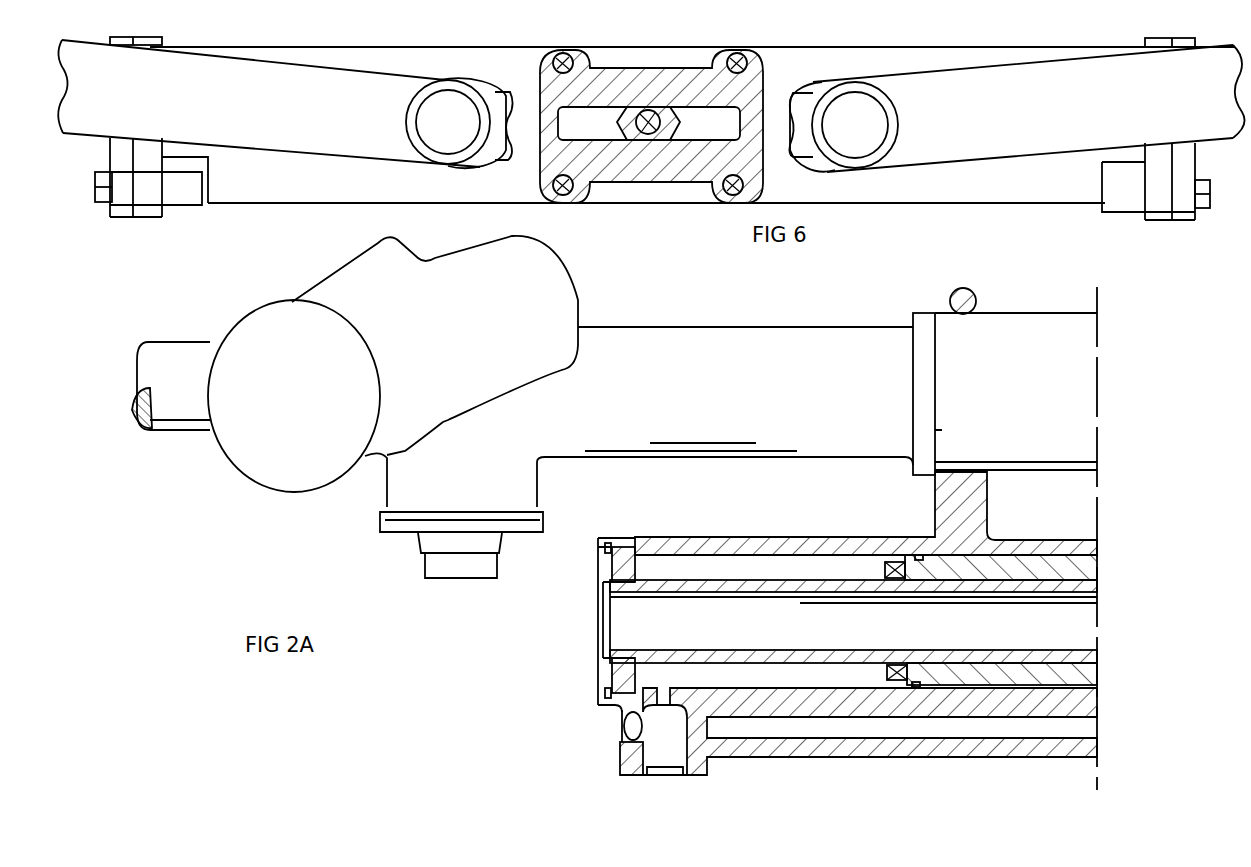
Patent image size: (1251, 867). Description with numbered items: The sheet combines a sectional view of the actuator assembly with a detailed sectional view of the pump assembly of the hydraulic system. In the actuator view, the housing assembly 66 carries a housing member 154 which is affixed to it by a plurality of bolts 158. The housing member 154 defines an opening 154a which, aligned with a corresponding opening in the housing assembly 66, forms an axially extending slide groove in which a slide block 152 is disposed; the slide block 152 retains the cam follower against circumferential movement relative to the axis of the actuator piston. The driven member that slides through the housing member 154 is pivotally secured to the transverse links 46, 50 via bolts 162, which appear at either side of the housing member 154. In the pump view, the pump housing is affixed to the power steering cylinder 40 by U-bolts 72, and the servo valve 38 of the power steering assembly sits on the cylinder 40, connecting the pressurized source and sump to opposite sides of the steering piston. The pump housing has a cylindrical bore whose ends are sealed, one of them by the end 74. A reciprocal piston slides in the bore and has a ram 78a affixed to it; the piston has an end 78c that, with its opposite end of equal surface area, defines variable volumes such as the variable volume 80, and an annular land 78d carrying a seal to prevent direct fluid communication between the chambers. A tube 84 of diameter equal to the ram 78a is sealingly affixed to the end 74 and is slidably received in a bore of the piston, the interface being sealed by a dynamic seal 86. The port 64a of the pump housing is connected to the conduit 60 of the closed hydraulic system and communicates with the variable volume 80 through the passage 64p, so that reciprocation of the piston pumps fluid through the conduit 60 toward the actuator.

In FIG. 2A, the servo valve 38 is at (556, 282).
In FIG. 2A, the power steering cylinder 40 is at (1062, 316).
In FIG. 6, the transverse link 46 is at (1105, 113).
In FIG. 6, the transverse link 50 is at (160, 110).
In FIG. 2A, the conduit 60 is at (662, 797).
In FIG. 2A, the port 64a is at (643, 786).
In FIG. 2A, the passage 64p is at (832, 727).
In FIG. 6, the housing assembly 66 is at (222, 201).
In FIG. 2A, the U-bolts 72 is at (976, 288).
In FIG. 2A, the end 74 is at (600, 578).
In FIG. 2A, the ram 78a is at (1067, 655).
In FIG. 2A, the end 78c is at (885, 563).
In FIG. 2A, the annular land 78d is at (897, 688).
In FIG. 2A, the variable volume 80 is at (702, 568).
In FIG. 2A, the tube 84 is at (600, 656).
In FIG. 2A, the dynamic seal 86 is at (885, 672).
In FIG. 6, the slide block 152 is at (613, 126).
In FIG. 6, the housing member 154 is at (669, 126).
In FIG. 6, the opening 154a is at (727, 127).
In FIG. 6, the bolts 158 is at (768, 62).
In FIG. 6, the bolts 162 is at (410, 118).